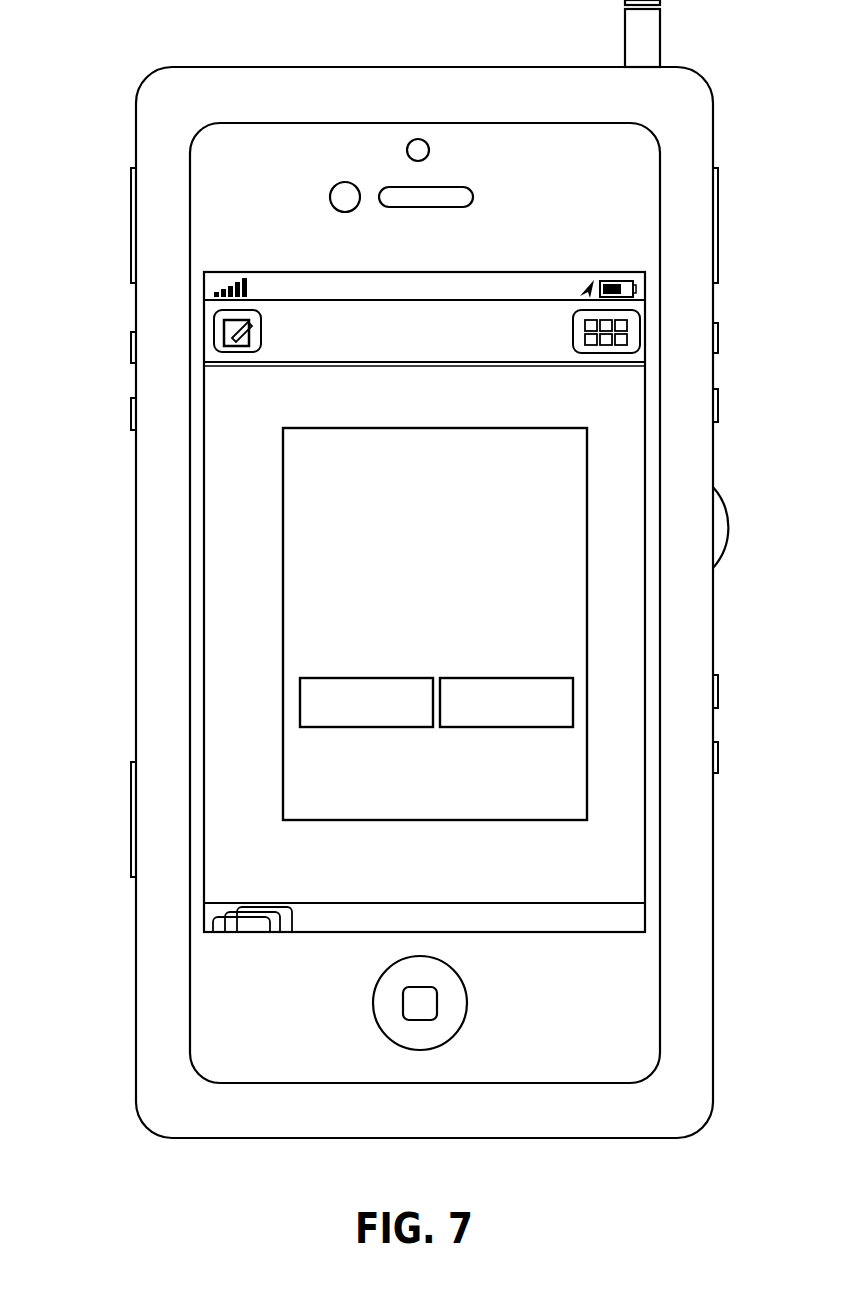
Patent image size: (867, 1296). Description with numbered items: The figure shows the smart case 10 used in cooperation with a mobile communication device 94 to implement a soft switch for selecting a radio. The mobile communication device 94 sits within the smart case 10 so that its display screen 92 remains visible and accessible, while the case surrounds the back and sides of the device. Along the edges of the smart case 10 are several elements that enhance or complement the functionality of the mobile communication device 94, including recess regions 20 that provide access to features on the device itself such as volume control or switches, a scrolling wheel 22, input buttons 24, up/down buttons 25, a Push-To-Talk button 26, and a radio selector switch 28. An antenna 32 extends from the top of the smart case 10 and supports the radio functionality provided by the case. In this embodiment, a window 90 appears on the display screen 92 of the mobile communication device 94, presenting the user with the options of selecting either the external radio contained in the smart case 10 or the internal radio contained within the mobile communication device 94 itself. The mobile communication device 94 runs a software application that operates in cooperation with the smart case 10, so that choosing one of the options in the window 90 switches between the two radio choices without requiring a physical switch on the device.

The smart case 10 is at (148, 1060).
The recess regions 20 is at (131, 218).
The scrolling wheel 22 is at (728, 503).
The input buttons 24 is at (718, 408).
The up/down buttons 25 is at (718, 762).
The Push-To-Talk (PTT) button 26 is at (718, 215).
The radio selector switch 28 is at (131, 812).
The antenna 32 is at (650, 35).
The window 90 is at (588, 600).
The display screen 92 is at (590, 856).
The mobile communication device 94 is at (630, 996).